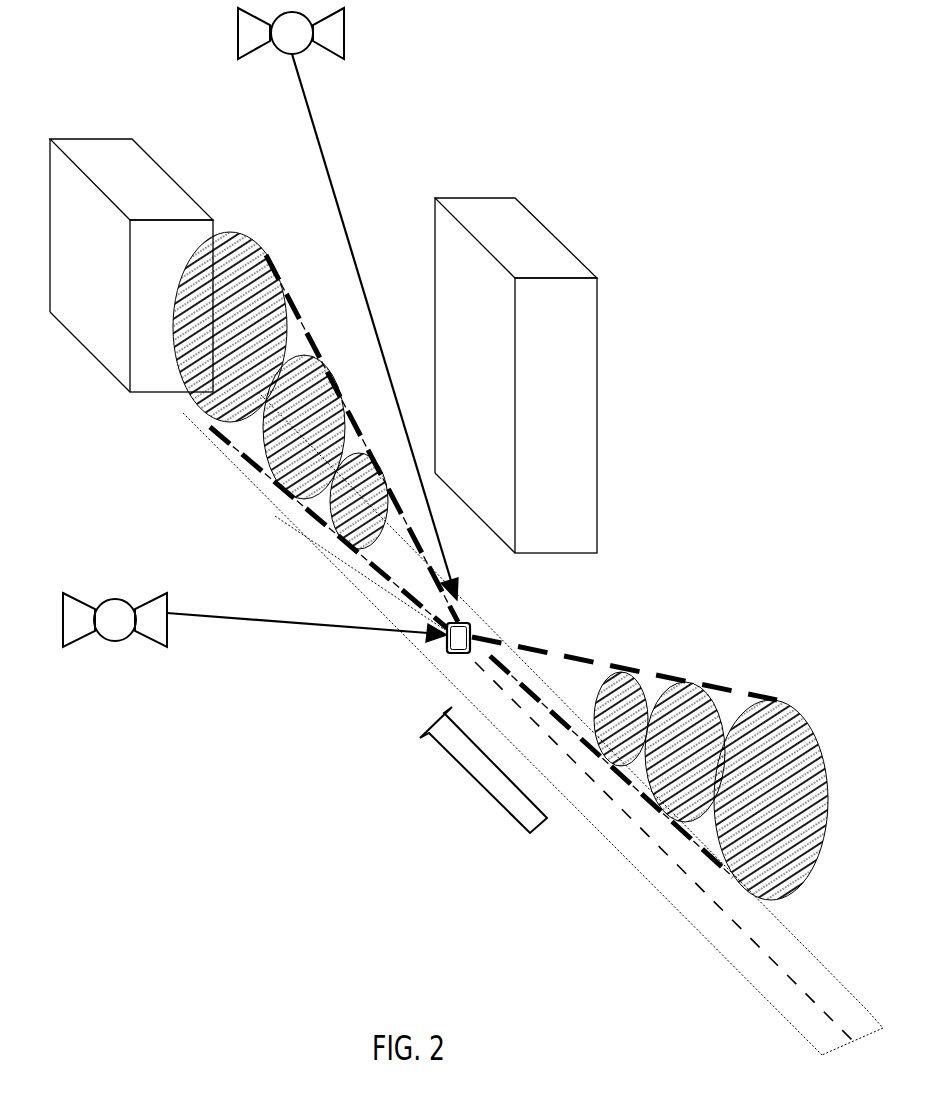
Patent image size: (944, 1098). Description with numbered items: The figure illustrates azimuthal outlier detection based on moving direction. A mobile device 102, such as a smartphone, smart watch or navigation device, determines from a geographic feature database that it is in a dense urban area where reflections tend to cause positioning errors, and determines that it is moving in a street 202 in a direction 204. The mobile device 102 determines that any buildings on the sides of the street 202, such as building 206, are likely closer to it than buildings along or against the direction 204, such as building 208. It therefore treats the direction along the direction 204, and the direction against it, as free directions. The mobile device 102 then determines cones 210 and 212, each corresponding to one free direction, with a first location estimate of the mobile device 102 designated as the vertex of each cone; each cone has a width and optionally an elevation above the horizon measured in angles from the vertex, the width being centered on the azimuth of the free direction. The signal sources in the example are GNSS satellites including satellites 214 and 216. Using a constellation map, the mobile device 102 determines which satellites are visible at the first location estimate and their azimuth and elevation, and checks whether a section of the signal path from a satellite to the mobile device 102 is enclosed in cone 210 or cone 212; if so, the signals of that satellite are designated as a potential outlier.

The mobile device 102 is at (447, 656).
The street 202 is at (633, 823).
The direction 204 is at (470, 772).
The building 206 is at (483, 200).
The building 208 is at (100, 138).
The cone 210 is at (243, 233).
The cone 212 is at (703, 684).
The satellite 214 is at (238, 58).
The satellite 216 is at (113, 598).